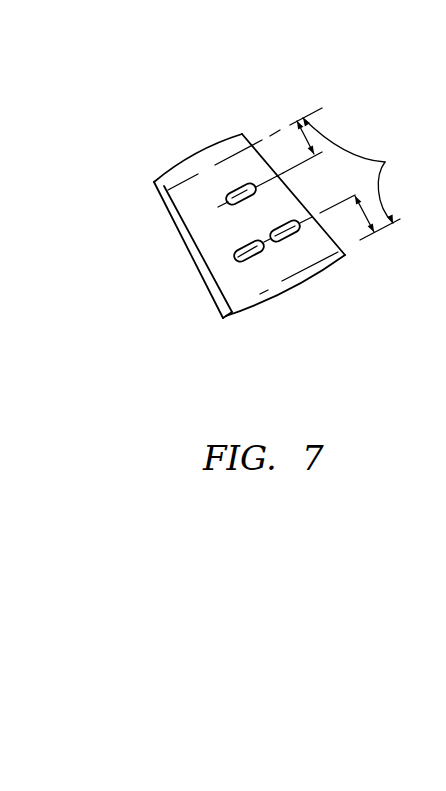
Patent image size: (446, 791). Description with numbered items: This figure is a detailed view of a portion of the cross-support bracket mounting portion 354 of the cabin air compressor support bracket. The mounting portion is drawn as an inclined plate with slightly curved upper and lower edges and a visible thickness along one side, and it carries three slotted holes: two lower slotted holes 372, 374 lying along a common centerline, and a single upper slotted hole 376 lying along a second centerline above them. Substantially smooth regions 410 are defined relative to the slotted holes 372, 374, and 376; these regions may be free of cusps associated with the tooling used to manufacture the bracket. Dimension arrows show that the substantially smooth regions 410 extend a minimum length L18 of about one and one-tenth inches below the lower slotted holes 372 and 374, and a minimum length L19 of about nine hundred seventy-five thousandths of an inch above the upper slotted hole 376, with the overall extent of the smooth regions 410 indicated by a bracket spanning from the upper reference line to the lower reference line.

The cross-support bracket mounting portion 354 is at (196, 156).
The lower slotted hole 372 is at (283, 226).
The lower slotted hole 374 is at (236, 250).
The upper slotted hole 376 is at (225, 199).
The substantially smooth regions 410 is at (367, 170).
The minimum length L18 is at (389, 235).
The minimum length L19 is at (300, 141).